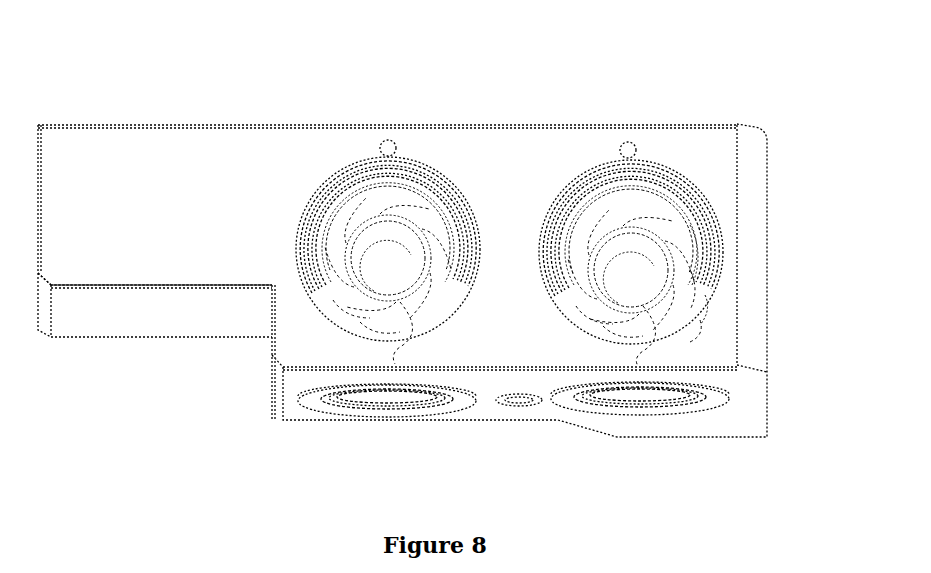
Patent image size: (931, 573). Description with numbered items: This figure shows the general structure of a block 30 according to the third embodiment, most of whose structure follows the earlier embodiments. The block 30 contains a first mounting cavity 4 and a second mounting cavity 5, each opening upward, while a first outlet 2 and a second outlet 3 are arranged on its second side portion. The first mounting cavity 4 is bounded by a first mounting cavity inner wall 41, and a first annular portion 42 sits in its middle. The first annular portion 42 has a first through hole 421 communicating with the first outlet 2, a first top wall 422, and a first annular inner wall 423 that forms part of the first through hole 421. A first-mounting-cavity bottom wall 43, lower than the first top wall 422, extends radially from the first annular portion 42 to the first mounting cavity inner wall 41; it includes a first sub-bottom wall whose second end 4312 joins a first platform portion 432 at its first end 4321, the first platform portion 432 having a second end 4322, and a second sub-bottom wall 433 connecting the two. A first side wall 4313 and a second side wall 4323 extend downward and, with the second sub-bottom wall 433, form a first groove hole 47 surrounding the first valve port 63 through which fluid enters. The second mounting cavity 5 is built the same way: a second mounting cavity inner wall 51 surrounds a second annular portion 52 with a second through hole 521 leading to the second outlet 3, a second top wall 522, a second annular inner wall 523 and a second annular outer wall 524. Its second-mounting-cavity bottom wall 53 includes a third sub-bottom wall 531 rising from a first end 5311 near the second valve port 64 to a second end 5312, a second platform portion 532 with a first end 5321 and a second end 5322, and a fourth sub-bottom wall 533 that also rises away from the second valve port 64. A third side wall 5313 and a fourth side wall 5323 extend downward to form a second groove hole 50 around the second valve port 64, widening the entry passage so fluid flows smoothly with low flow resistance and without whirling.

The block 30 is at (683, 90).
The first outlet 2 is at (398, 410).
The second outlet 3 is at (640, 400).
The first mounting cavity 4 is at (304, 290).
The first mounting cavity inner wall 41 is at (378, 146).
The first annular portion 42 is at (320, 293).
The first through hole 421 is at (345, 315).
The first top wall 422 is at (378, 328).
The first annular inner wall 423 is at (258, 287).
The first-mounting-cavity bottom wall 43 is at (440, 316).
The second end of the first sub-bottom wall 4312 is at (420, 330).
The first side wall 4313 is at (446, 182).
The first platform portion 432 is at (310, 234).
The first end of the first platform portion 4321 is at (410, 345).
The second end of the first platform portion 4322 is at (345, 262).
The second side wall 4323 is at (318, 212).
The second sub-bottom wall 433 is at (412, 166).
The first groove hole 47 is at (318, 198).
The first valve port 63 is at (328, 185).
The second mounting cavity 5 is at (540, 296).
The second groove hole 50 is at (560, 205).
The second mounting cavity inner wall 51 is at (618, 150).
The second annular portion 52 is at (562, 300).
The second through hole 521 is at (585, 320).
The second top wall 522 is at (620, 332).
The second annular inner wall 523 is at (568, 290).
The second annular outer wall 524 is at (712, 290).
The second-mounting-cavity bottom wall 53 is at (716, 330).
The third sub-bottom wall 531 is at (712, 314).
The first end of the third sub-bottom wall 5311 is at (716, 244).
The second end of the third sub-bottom wall 5312 is at (660, 335).
The third side wall 5313 is at (688, 184).
The second platform portion 532 is at (566, 240).
The first end of the second platform portion 5321 is at (650, 348).
The second end of the second platform portion 5322 is at (588, 266).
The fourth side wall 5323 is at (565, 220).
The fourth sub-bottom wall 533 is at (655, 168).
The second valve port 64 is at (570, 186).